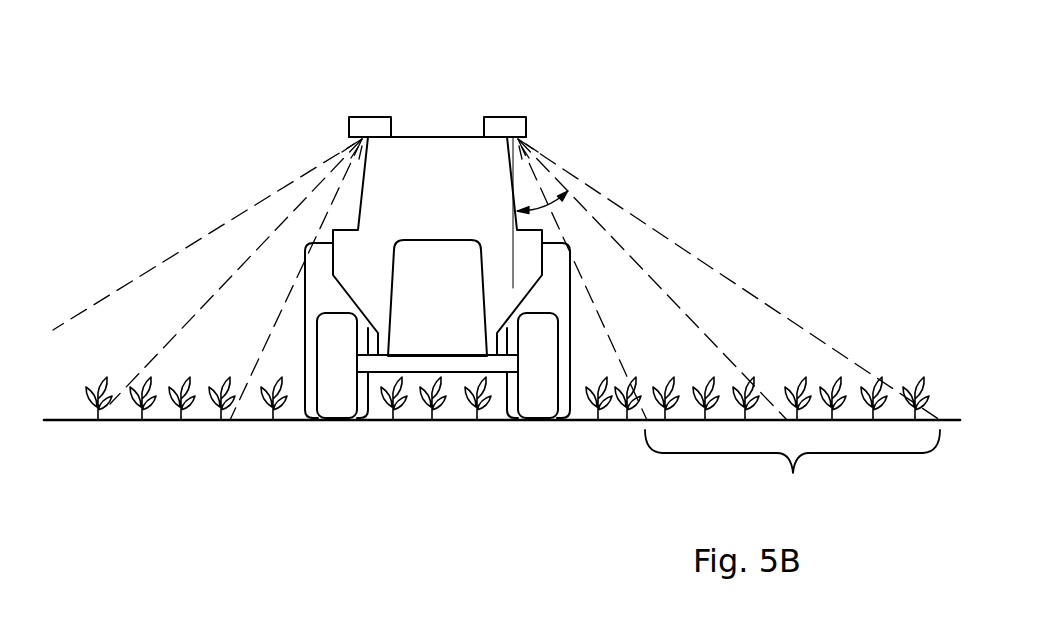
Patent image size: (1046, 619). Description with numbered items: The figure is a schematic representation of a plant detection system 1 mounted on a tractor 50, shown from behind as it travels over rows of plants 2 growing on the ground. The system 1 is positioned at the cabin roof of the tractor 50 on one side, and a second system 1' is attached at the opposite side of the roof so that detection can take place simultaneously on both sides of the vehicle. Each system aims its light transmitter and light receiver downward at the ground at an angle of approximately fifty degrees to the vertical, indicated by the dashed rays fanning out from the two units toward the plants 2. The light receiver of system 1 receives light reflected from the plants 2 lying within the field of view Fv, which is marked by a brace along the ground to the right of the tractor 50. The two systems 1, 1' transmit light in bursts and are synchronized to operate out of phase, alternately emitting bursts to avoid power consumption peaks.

The system 1 is at (712, 228).
The second system 1' is at (222, 228).
The tractor 50 is at (437, 136).
The plants 2 is at (176, 421).
The field of view Fv is at (792, 473).